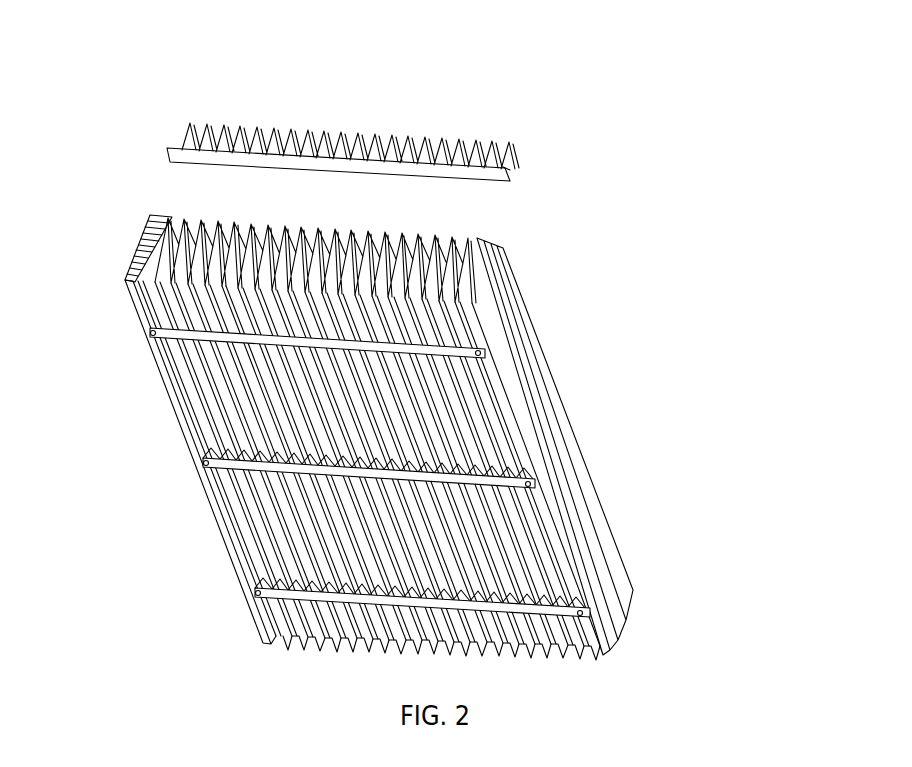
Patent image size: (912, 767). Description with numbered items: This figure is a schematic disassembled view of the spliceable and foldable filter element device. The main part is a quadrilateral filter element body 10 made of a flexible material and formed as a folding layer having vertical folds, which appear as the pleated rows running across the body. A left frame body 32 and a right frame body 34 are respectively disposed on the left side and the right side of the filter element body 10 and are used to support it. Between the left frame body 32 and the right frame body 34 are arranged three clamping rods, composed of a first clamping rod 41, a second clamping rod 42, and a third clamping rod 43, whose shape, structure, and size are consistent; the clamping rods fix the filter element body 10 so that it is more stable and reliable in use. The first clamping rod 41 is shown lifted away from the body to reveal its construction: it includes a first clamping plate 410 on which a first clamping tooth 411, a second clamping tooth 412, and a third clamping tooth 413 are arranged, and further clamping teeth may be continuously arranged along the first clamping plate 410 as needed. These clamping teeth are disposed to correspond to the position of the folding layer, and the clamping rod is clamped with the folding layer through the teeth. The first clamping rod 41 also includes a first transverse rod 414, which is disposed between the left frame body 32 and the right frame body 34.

The quadrilateral filter element body 10 is at (442, 365).
The left frame body 32 is at (183, 437).
The right frame body 34 is at (565, 420).
The first clamping rod 41 is at (340, 121).
The first clamping plate 410 is at (197, 160).
The first clamping tooth 411 is at (517, 150).
The second clamping tooth 412 is at (496, 142).
The third clamping tooth 413 is at (473, 142).
The first transverse rod 414 is at (147, 333).
The second clamping rod 42 is at (530, 487).
The third clamping rod 43 is at (585, 618).